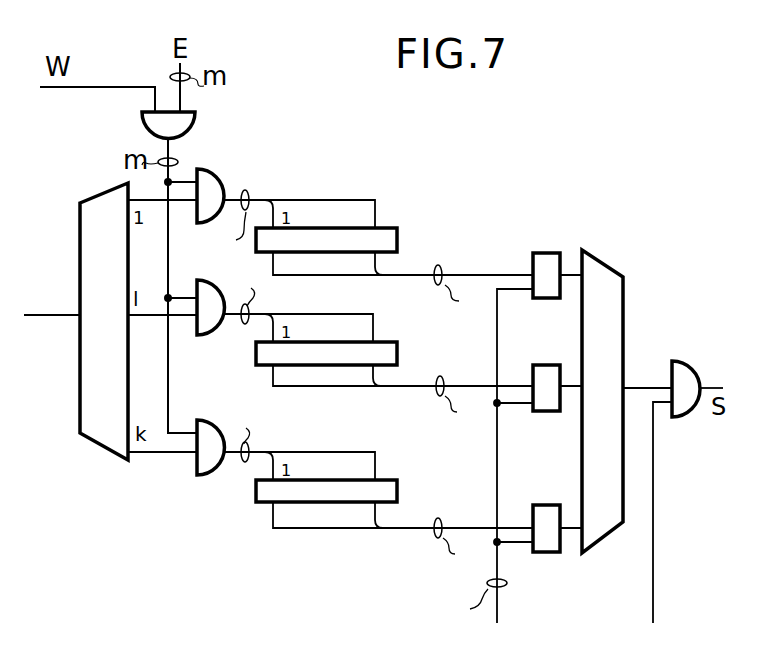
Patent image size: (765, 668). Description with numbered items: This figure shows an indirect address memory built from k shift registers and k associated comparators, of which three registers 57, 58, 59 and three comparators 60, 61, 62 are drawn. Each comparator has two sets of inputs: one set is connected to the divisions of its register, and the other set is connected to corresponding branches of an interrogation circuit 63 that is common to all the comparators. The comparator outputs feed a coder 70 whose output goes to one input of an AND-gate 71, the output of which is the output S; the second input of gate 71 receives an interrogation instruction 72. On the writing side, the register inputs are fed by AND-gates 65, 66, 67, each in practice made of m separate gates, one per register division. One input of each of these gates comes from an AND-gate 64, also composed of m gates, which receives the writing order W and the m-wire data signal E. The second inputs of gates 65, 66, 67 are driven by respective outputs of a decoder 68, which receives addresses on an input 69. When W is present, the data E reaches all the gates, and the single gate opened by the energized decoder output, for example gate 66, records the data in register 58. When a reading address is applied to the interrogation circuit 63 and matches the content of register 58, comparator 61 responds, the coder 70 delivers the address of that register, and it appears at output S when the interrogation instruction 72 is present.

The shift register 57 is at (390, 236).
The shift register 58 is at (390, 355).
The shift register 59 is at (385, 483).
The comparator 60 is at (547, 262).
The comparator 61 is at (550, 412).
The comparator 62 is at (552, 551).
The interrogation circuit 63 is at (494, 460).
The AND-gate 64 is at (180, 128).
The AND-gate 65 is at (216, 192).
The AND-gate 66 is at (219, 328).
The AND-gate 67 is at (226, 464).
The decoder 68 is at (116, 439).
The input 69 is at (28, 318).
The coder 70 is at (610, 340).
The AND-gate 71 is at (686, 376).
The interrogation instruction 72 is at (673, 517).